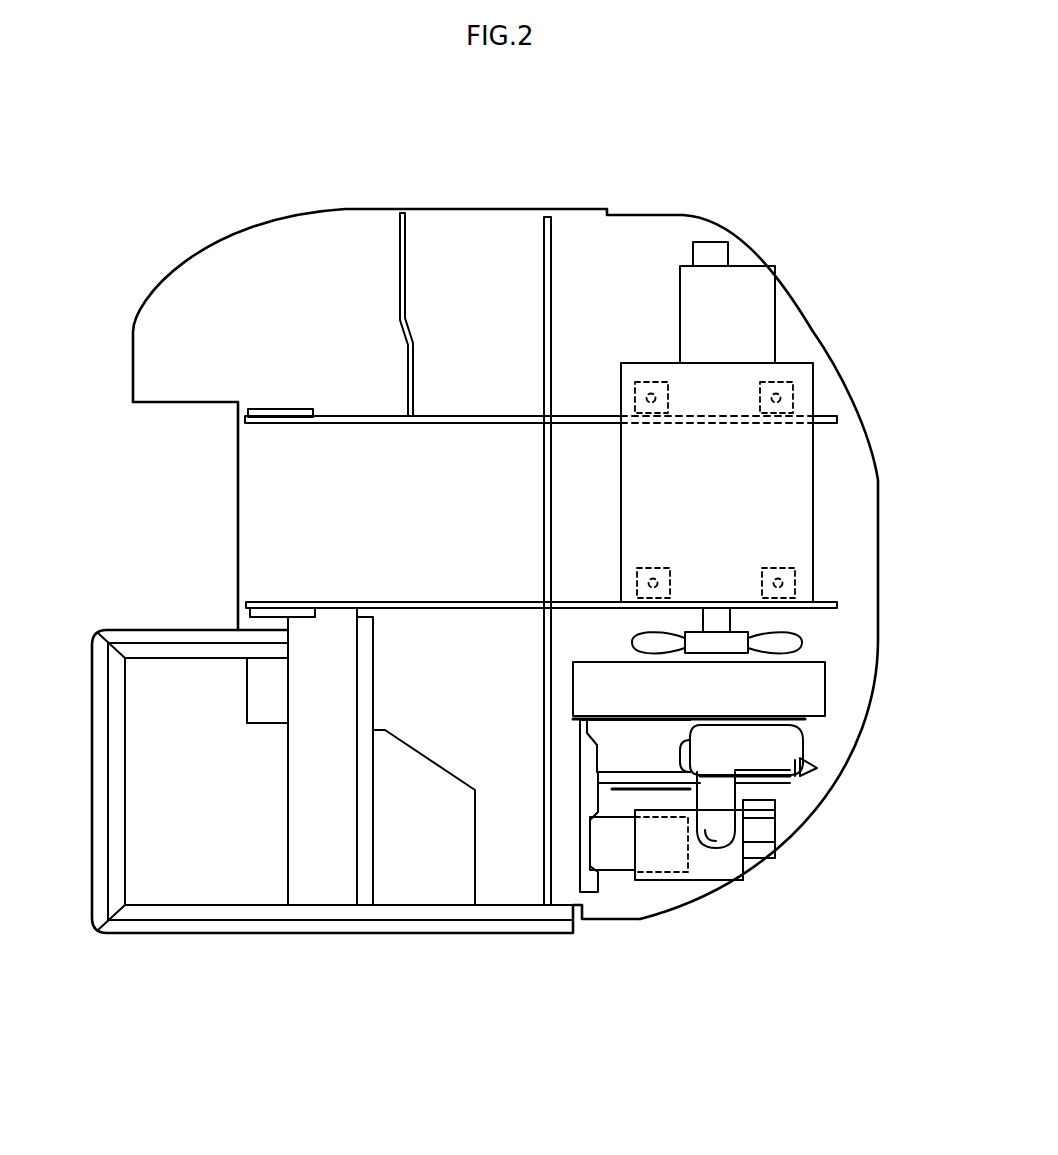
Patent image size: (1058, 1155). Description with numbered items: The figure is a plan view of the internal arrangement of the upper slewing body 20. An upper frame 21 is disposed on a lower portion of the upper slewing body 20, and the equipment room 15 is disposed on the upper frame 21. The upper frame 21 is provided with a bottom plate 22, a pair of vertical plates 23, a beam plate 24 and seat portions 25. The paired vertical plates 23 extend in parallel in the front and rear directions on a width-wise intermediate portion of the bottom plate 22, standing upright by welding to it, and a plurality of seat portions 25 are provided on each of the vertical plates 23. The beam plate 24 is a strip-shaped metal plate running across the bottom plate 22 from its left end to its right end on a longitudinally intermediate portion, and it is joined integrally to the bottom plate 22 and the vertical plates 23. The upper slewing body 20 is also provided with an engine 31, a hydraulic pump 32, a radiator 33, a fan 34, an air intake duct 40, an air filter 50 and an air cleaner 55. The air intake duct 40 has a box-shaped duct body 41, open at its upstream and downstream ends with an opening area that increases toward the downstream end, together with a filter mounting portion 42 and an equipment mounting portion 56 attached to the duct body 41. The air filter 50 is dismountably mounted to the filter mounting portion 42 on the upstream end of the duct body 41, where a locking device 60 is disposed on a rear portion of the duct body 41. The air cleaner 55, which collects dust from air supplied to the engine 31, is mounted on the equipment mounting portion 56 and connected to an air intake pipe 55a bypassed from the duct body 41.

The equipment room 15 is at (640, 256).
The upper slewing body 20 is at (333, 168).
The upper frame 21 is at (806, 307).
The bottom plate 22 is at (872, 440).
The vertical plates 23 is at (354, 425).
The beam plate 24 is at (544, 505).
The seat portions 25 is at (635, 398).
The engine 31 is at (813, 503).
The hydraulic pump 32 is at (680, 318).
The radiator 33 is at (820, 690).
The fan 34 is at (802, 643).
The air intake duct 40 is at (616, 884).
The duct body 41 is at (805, 725).
The filter mounting portion 42 is at (795, 785).
The air filter 50 is at (785, 778).
The air cleaner 55 is at (718, 877).
The air intake pipe 55a is at (745, 860).
The equipment mounting portion 56 is at (662, 866).
The locking device 60 is at (817, 768).